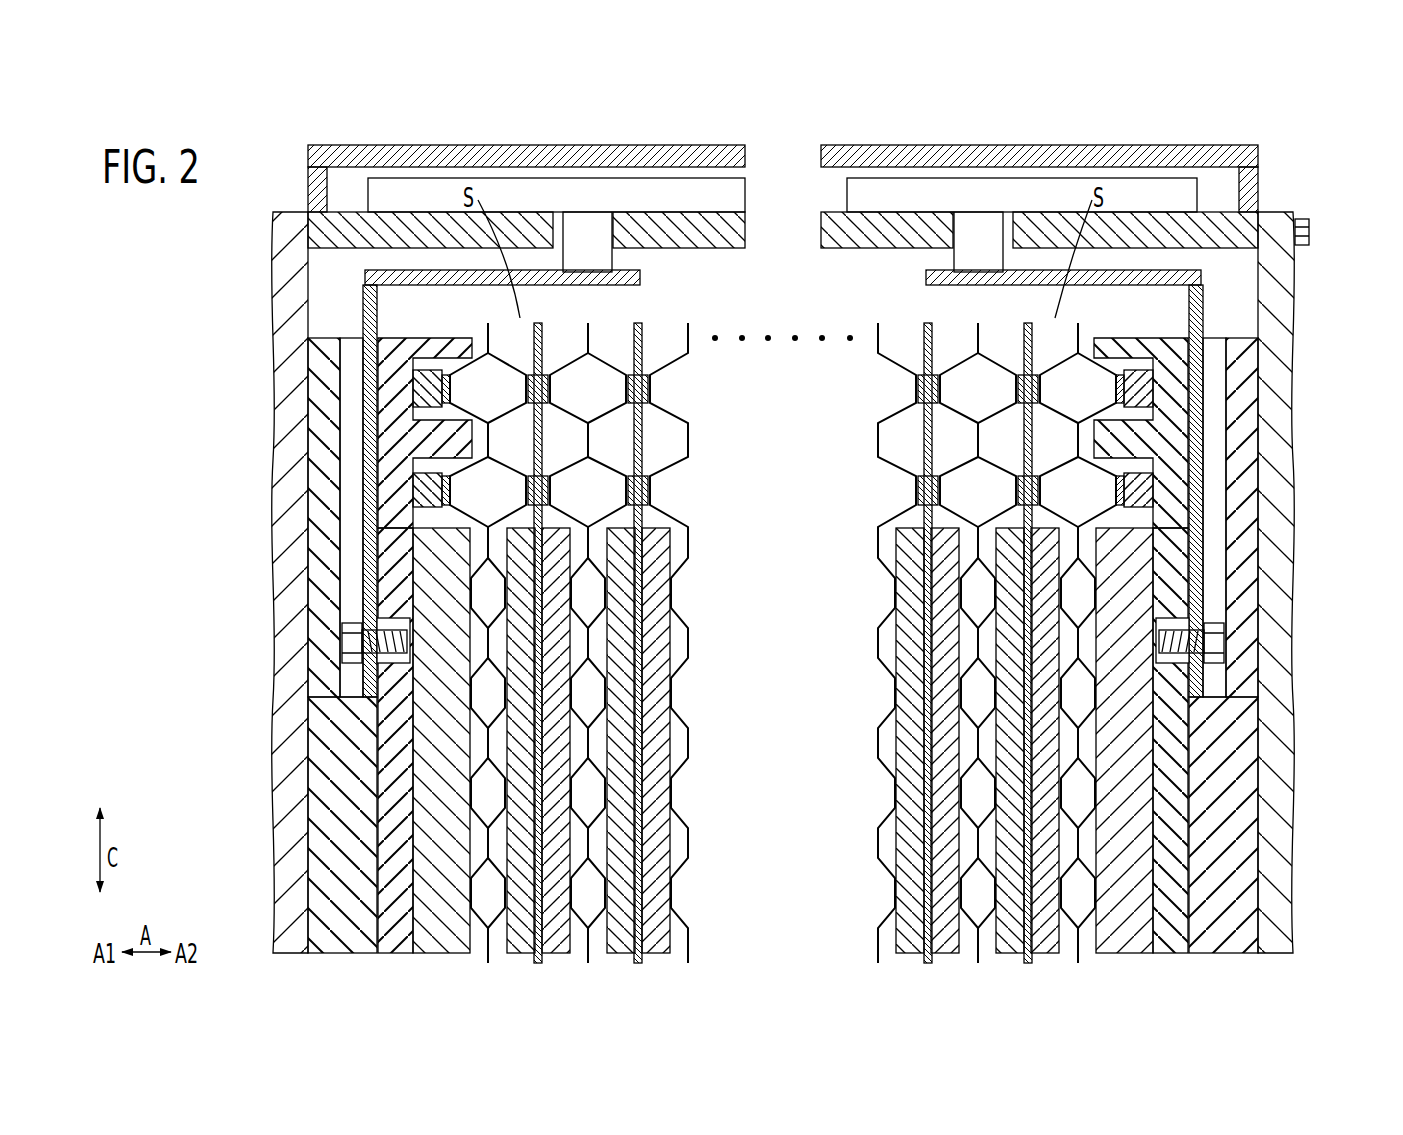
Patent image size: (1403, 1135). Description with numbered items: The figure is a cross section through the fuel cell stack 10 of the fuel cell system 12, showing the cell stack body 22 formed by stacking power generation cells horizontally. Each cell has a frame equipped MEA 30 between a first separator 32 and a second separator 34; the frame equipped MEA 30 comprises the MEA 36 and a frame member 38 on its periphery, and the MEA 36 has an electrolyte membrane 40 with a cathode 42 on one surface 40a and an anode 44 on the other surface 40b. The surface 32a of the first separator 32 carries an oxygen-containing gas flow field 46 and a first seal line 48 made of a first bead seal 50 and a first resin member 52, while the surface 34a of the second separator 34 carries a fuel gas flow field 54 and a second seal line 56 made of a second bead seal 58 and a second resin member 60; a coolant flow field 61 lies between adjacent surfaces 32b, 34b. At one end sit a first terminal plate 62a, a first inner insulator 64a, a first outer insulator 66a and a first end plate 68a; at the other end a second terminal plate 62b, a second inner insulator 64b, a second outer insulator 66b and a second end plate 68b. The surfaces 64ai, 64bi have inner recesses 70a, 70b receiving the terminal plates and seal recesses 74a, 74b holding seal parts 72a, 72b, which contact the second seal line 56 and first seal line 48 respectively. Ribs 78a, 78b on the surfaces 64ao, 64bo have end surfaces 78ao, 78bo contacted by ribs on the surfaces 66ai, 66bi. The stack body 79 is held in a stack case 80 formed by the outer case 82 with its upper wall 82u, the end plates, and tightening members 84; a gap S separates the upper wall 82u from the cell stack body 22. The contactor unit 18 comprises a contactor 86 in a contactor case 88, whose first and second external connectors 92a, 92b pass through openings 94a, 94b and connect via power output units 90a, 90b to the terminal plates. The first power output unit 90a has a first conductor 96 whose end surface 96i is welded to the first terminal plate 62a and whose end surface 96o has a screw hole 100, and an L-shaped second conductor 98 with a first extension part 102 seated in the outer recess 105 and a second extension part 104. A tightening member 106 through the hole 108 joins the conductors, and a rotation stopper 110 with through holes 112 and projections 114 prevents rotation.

The fuel cell stack 10 is at (1288, 180).
The fuel cell system 12 is at (150, 241).
The contactor unit 18 is at (304, 158).
The cell stack body 22 is at (865, 318).
The frame equipped MEA 30 is at (648, 322).
The first separator 32 is at (622, 458).
The surface of first separator 32a is at (905, 600).
The surface of first separator 32b is at (945, 660).
The second separator 34 is at (666, 418).
The surface of second separator 34a is at (930, 800).
The surface of second separator 34b is at (925, 815).
The MEA 36 is at (812, 850).
The frame member 38 is at (926, 344).
The electrolyte membrane 40 is at (896, 888).
The one surface of electrolyte membrane 40a is at (940, 690).
The other surface of electrolyte membrane 40b is at (960, 708).
The cathode 42 is at (900, 856).
The anode 44 is at (896, 912).
The oxygen-containing gas flow field 46 is at (950, 772).
The first seal line 48 is at (820, 470).
The first bead seal 50 is at (898, 476).
The first resin member 52 is at (916, 496).
The fuel gas flow field 54 is at (955, 752).
The second seal line 56 is at (820, 362).
The second bead seal 58 is at (916, 385).
The second resin member 60 is at (916, 398).
The coolant flow field 61 is at (955, 712).
The first terminal plate 62a is at (298, 933).
The second terminal plate 62b is at (1268, 933).
The first inner insulator 64a is at (440, 855).
The second inner insulator 64b is at (1126, 855).
The surface of first inner insulator 64ai is at (470, 352).
The surface of first inner insulator 64ao is at (412, 760).
The surface of second inner insulator 64bi is at (1096, 352).
The surface of second inner insulator 64bo is at (1154, 760).
The first outer insulator 66a is at (395, 830).
The second outer insulator 66b is at (1171, 830).
The surface of first outer insulator 66ai is at (390, 782).
The surface of second outer insulator 66bi is at (1176, 782).
The first end plate 68a is at (322, 810).
The second end plate 68b is at (1244, 810).
The first inner recess 70a is at (385, 888).
The second inner recess 70b is at (1181, 888).
The first seal part 72a is at (450, 392).
The second seal part 72b is at (1116, 392).
The first seal recess 74a is at (446, 346).
The second seal recess 74b is at (1120, 346).
The rib 78a is at (378, 738).
The rib 78b is at (1188, 738).
The end surface of rib 78ao is at (378, 560).
The end surface of rib 78bo is at (1188, 560).
The stack body 79 is at (1262, 903).
The stack case 80 is at (1262, 210).
The outer case 82 is at (830, 210).
The upper wall 82u is at (1311, 232).
The tightening member 84 is at (1310, 243).
The contactor 86 is at (366, 198).
The contactor case 88 is at (324, 183).
The first power output unit 90a is at (646, 276).
The second power output unit 90b is at (920, 276).
The first external connector 92a is at (585, 230).
The second external connector 92b is at (978, 230).
The first opening 94a is at (620, 232).
The second opening 94b is at (945, 232).
The first conductor 96 is at (345, 630).
The end surface of first conductor 96i is at (372, 625).
The end surface of first conductor 96o is at (352, 640).
The second conductor 98 is at (358, 277).
The screw hole 100 is at (343, 686).
The first extension part 102 is at (361, 384).
The second extension part 104 is at (458, 272).
The outer recess 105 is at (343, 347).
The tightening member 106 is at (380, 650).
The hole 108 is at (345, 645).
The rotation stopper 110 is at (372, 497).
The through hole 112 is at (375, 494).
The projection 114 is at (378, 499).